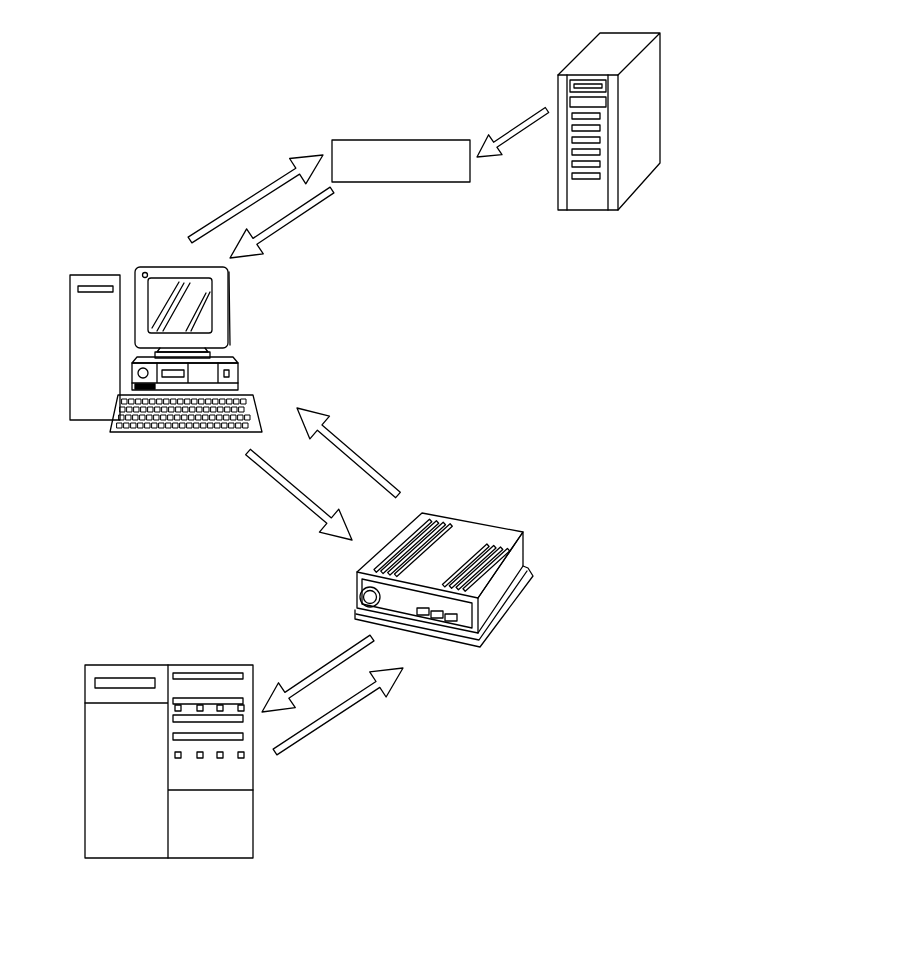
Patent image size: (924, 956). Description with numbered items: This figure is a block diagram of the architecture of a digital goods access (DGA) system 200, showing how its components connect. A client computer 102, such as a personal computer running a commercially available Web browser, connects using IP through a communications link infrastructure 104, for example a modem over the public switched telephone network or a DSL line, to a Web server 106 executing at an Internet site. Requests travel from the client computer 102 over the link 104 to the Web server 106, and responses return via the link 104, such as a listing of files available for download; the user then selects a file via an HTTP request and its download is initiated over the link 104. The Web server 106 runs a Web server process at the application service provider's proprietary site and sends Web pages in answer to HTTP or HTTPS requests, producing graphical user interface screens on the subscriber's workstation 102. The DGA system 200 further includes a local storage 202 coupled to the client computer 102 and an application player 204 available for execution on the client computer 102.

The digital goods access (DGA) system 200 is at (814, 181).
The client computer 102 is at (148, 266).
The communications link infrastructure 104 is at (457, 517).
The Web server 106 is at (120, 665).
The local storage 202 is at (638, 33).
The application player 204 is at (350, 140).